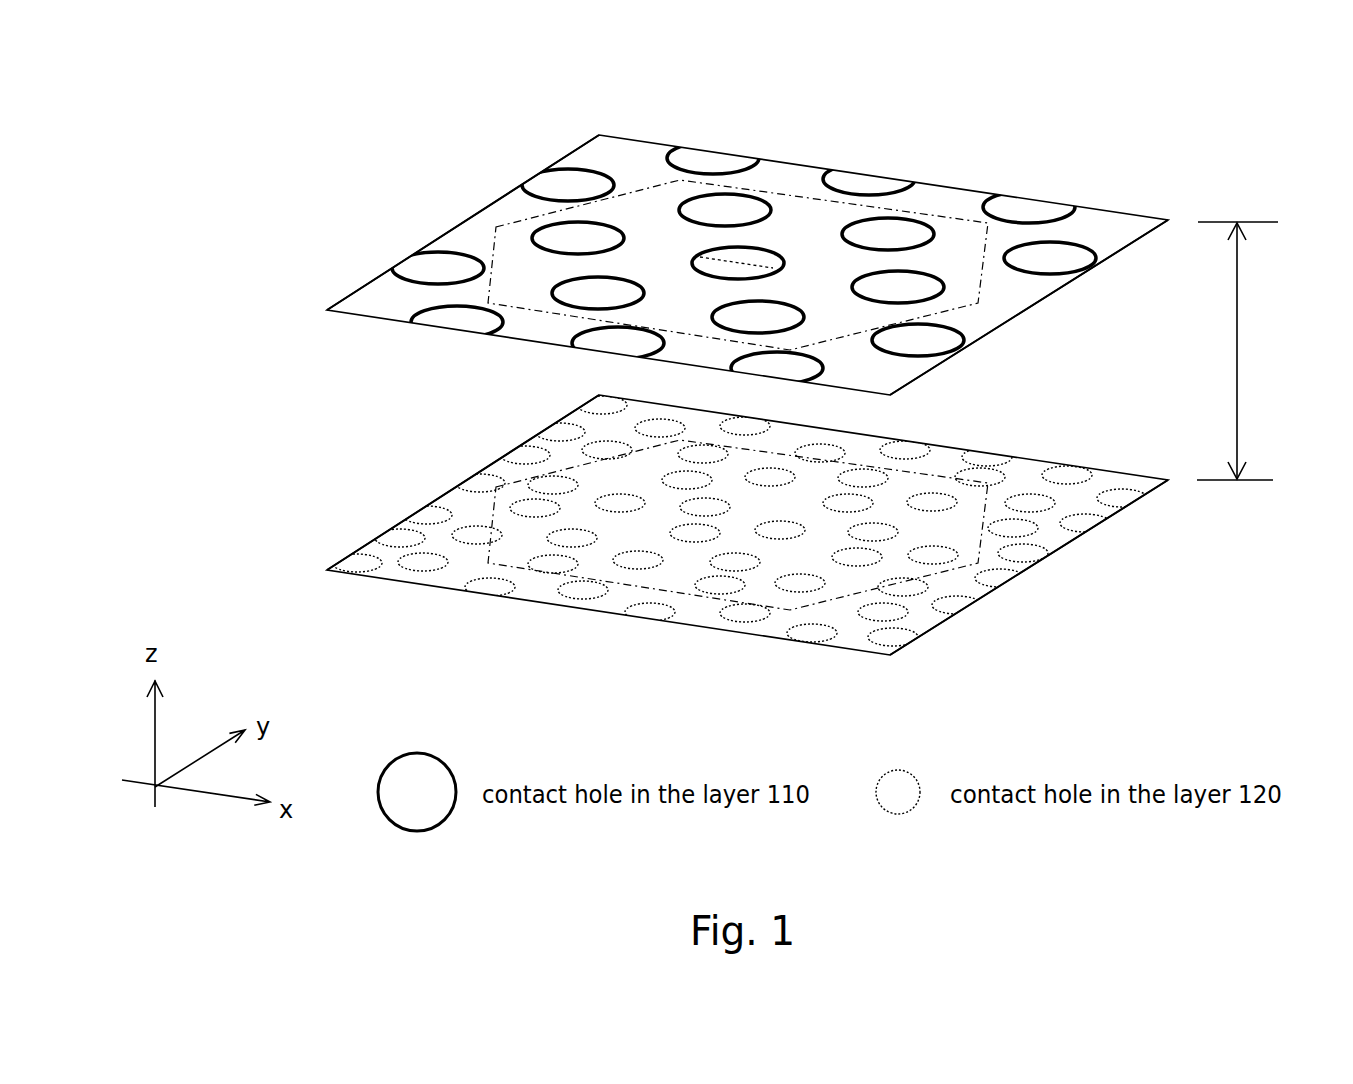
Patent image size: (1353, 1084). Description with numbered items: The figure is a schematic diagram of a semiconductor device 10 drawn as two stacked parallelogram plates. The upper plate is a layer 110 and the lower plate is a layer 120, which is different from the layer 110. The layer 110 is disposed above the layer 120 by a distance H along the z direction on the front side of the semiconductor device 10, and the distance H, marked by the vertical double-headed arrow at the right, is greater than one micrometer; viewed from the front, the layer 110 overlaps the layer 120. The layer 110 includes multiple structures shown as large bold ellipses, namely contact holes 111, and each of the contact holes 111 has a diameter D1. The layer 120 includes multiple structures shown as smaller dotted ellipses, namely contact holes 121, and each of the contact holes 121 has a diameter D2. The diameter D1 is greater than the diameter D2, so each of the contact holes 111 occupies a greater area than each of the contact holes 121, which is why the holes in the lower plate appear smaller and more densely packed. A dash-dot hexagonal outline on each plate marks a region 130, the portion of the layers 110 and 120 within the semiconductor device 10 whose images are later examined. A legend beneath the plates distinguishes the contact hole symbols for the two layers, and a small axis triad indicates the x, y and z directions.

The semiconductor device 10 is at (186, 69).
The layer 110 is at (676, 235).
The contact holes 111 is at (692, 202).
The layer 120 is at (686, 546).
The contact holes 121 is at (635, 568).
The region 130 is at (525, 218).
The diameter D1 is at (743, 263).
The diameter D2 is at (722, 506).
The distance H is at (1237, 351).